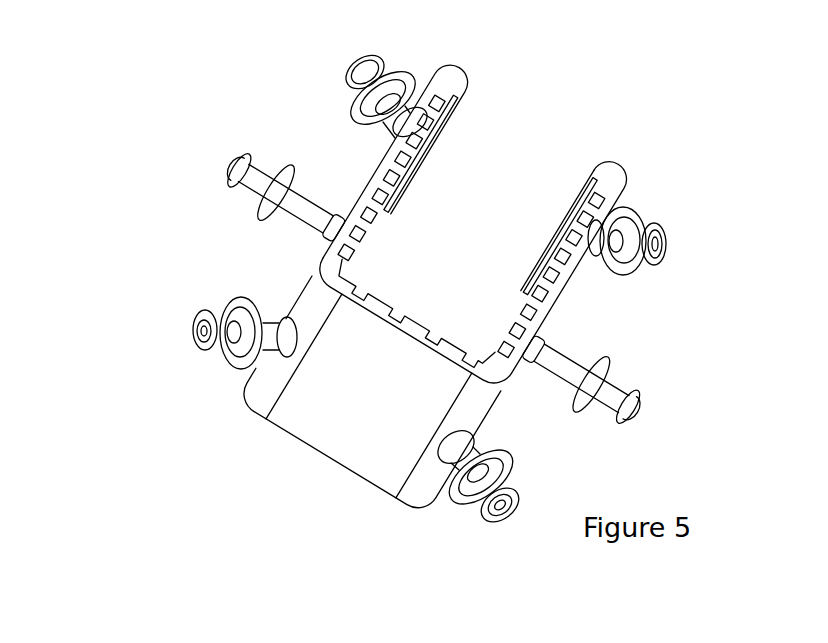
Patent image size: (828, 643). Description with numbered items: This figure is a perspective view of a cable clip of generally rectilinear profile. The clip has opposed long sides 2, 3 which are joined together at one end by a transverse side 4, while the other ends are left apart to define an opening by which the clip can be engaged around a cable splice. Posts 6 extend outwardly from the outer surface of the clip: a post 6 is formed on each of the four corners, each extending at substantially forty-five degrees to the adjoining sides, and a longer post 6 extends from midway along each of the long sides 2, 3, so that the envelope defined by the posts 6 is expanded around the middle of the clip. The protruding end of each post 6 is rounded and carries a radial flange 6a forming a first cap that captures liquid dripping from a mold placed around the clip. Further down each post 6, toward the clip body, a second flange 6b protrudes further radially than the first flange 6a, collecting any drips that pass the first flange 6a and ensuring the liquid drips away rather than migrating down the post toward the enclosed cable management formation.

The long side 2 is at (307, 257).
The long side 3 is at (557, 295).
The transverse side 4 is at (343, 413).
The post 6 is at (230, 333).
The radial flange 6a is at (243, 157).
The second flange 6b is at (633, 220).